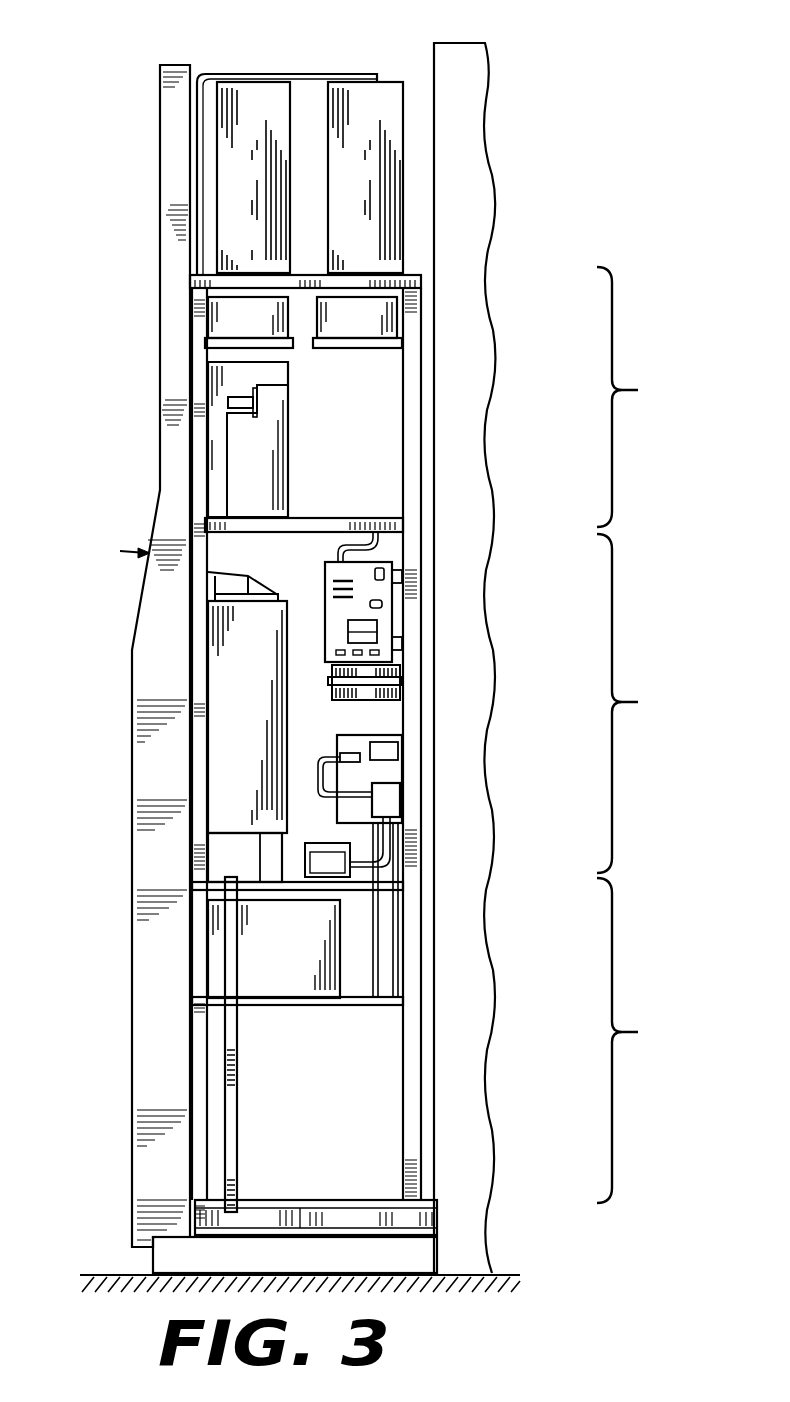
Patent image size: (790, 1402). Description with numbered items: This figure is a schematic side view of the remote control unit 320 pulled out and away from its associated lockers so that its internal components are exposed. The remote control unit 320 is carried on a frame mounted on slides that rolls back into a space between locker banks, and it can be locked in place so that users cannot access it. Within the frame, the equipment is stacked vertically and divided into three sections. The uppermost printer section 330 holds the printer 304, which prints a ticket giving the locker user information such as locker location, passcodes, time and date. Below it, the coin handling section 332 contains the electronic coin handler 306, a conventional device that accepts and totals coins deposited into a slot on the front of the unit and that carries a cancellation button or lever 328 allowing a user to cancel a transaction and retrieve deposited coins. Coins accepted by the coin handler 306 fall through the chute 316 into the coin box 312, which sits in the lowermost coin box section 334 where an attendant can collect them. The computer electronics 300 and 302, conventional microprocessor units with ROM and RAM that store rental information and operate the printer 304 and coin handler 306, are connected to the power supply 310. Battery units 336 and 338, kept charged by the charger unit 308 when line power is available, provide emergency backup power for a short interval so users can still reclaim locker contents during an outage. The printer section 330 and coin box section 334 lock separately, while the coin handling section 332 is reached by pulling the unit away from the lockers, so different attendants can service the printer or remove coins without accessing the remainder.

The computer electronics 300 is at (257, 93).
The computer electronics 302 is at (378, 95).
The printer 304 is at (243, 465).
The electronic coin handler 306 is at (228, 672).
The charger unit 308 is at (380, 613).
The power supply 310 is at (387, 770).
The coin box 312 is at (270, 953).
The chute 316 is at (272, 850).
The remote control unit 320 is at (177, 343).
The cancellation button or lever 328 is at (120, 551).
The printer section 330 is at (640, 397).
The coin handling section 332 is at (642, 703).
The coin box section 334 is at (642, 1040).
The battery unit 336 is at (228, 309).
The battery unit 338 is at (368, 320).